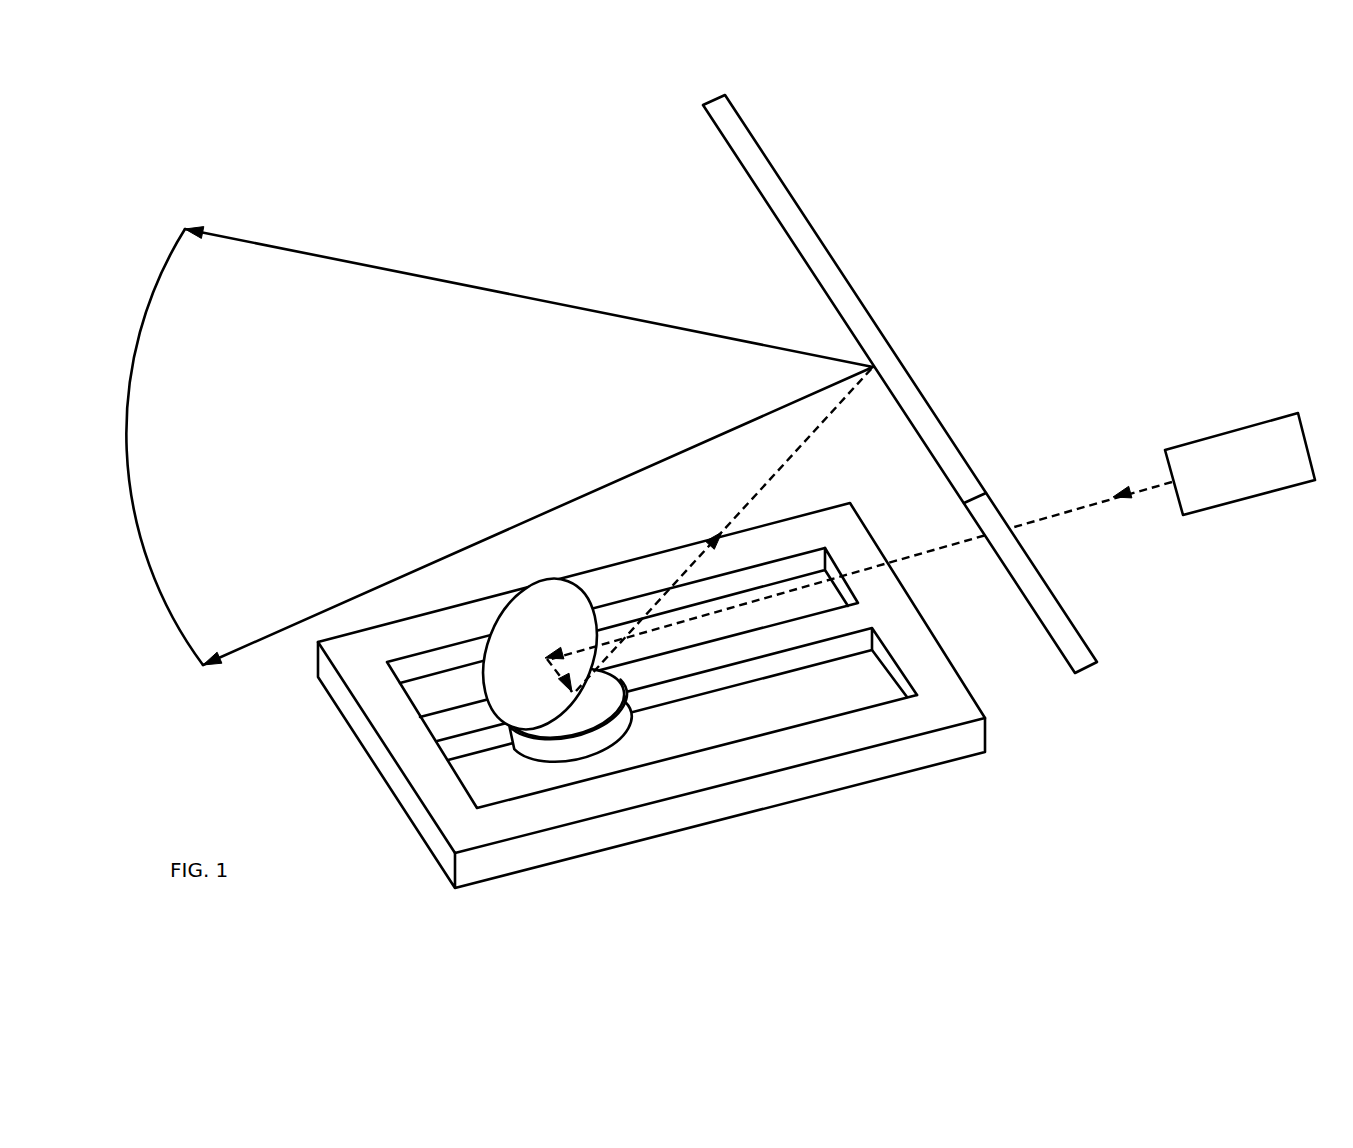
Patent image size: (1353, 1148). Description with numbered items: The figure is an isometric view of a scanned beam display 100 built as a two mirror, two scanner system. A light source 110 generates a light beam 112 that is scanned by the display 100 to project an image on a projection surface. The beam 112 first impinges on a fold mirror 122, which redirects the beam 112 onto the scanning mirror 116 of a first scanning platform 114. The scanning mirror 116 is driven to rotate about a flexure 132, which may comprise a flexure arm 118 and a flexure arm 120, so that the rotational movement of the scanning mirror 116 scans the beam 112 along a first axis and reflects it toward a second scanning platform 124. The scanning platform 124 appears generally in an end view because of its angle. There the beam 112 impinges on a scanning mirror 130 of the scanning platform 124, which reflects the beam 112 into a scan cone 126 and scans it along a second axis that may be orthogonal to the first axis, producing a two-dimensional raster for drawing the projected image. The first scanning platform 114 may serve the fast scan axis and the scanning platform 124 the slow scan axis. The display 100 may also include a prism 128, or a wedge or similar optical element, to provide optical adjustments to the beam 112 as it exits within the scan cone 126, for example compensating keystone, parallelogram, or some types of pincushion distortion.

The scanned beam display 100 is at (1007, 152).
The light source 110 is at (1230, 428).
The light beam 112 is at (1083, 506).
The first scanning platform 114 is at (955, 762).
The scanning mirror 116 is at (626, 736).
The flexure arm 118 is at (773, 677).
The flexure arm 120 is at (473, 758).
The fold mirror 122 is at (560, 605).
The scanning platform 124 is at (748, 128).
The scan cone 126 is at (301, 253).
The prism 128 is at (475, 394).
The scanning mirror 130 is at (857, 343).
The flexure 132 is at (720, 693).